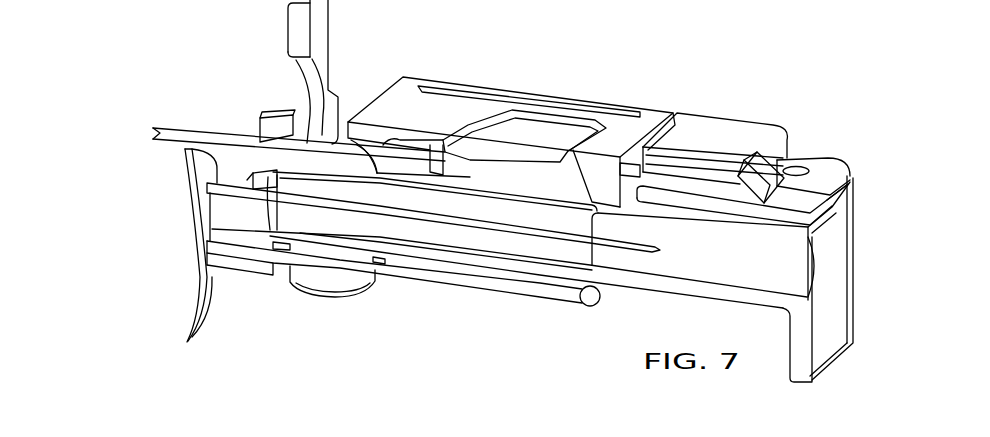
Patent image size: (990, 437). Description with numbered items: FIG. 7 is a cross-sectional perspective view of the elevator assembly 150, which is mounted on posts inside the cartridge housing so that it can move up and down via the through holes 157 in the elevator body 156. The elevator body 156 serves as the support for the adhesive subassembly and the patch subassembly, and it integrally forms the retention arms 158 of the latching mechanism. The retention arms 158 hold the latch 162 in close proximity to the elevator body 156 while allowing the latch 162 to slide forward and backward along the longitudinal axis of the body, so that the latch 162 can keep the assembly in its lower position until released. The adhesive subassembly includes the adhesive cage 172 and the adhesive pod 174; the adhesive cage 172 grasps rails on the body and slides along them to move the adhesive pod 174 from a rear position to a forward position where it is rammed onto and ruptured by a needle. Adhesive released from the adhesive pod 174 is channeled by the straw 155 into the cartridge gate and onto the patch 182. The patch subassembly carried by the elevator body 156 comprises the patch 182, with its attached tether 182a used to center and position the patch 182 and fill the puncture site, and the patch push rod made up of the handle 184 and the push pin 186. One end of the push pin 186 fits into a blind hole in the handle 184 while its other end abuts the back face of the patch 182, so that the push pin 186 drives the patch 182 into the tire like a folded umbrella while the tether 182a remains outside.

The elevator assembly 150 is at (892, 223).
The straw 155 is at (156, 132).
The elevator body 156 is at (840, 343).
The through holes 157 is at (812, 173).
The retention arms 158 is at (698, 128).
The latch 162 is at (762, 172).
The adhesive cage 172 is at (412, 100).
The adhesive pod 174 is at (540, 132).
The patch 182 is at (188, 322).
The tether 182a is at (537, 293).
The handle 184 is at (753, 271).
The push pin 186 is at (412, 217).